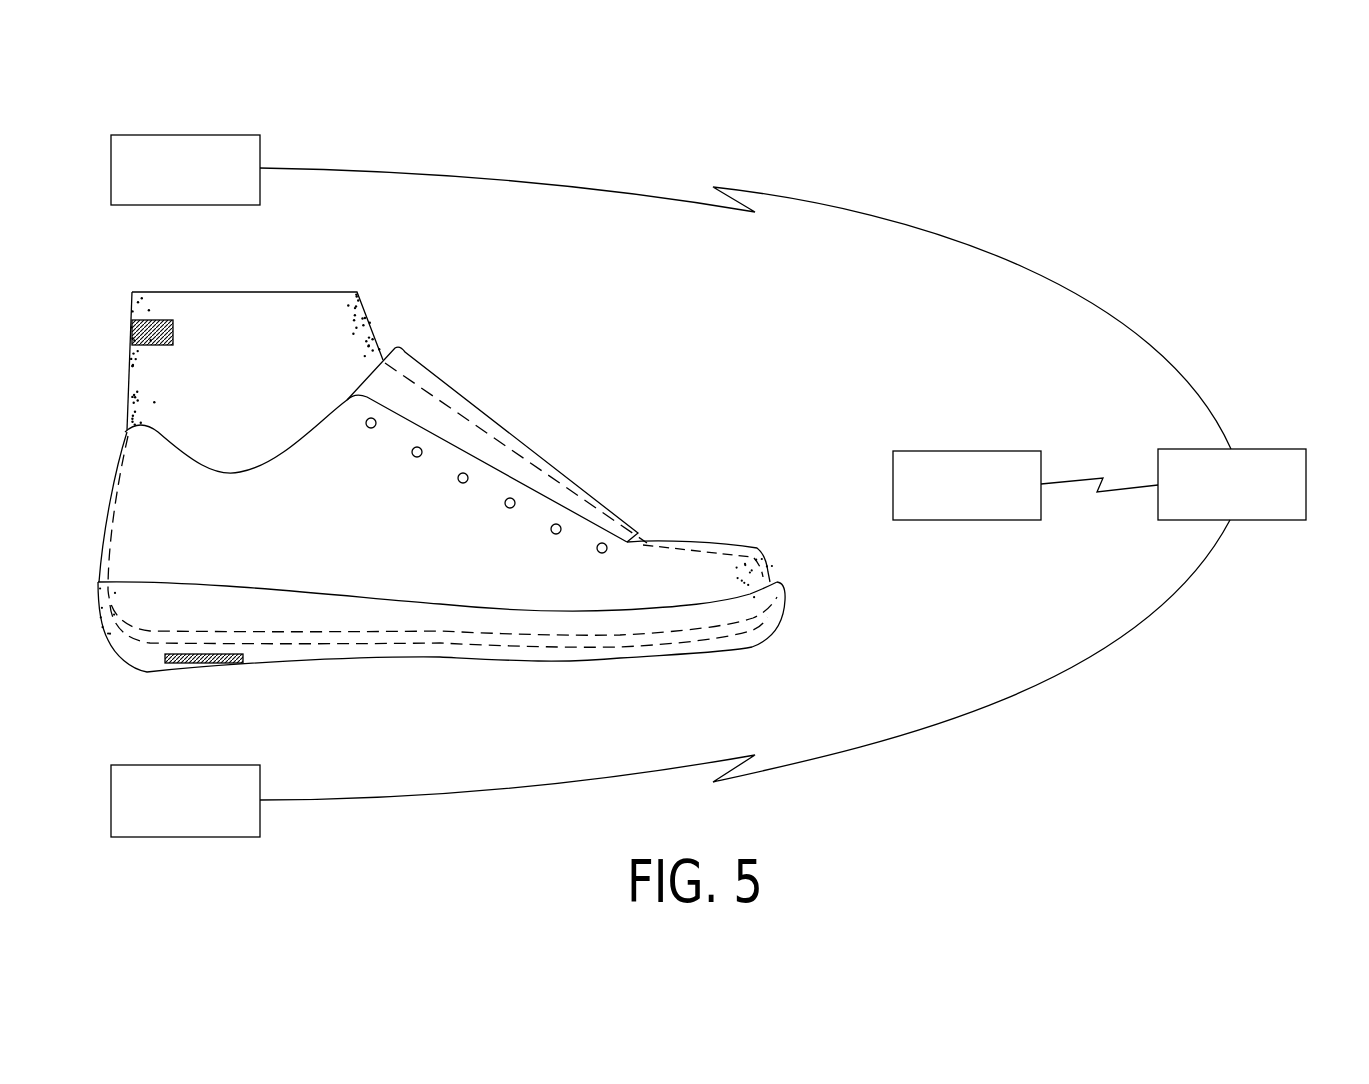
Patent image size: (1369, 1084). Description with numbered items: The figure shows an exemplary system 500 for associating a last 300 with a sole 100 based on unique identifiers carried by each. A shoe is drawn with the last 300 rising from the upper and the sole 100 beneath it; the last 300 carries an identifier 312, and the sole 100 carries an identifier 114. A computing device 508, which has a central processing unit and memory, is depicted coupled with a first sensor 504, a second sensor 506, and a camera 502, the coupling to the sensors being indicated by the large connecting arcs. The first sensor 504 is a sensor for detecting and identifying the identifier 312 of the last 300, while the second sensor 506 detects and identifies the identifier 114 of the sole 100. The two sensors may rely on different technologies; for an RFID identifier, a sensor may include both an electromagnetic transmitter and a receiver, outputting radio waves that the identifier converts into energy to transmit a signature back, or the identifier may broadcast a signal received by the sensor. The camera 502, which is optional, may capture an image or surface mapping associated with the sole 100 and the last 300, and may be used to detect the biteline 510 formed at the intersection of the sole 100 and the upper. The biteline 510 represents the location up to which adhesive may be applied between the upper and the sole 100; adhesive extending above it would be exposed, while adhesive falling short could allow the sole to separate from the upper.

The sole 100 is at (421, 531).
The identifier 114 is at (221, 668).
The last 300 is at (241, 340).
The identifier 312 is at (131, 331).
The system 500 is at (1178, 198).
The camera 502 is at (933, 451).
The first sensor 504 is at (150, 134).
The second sensor 506 is at (150, 838).
The computing device 508 is at (1269, 520).
The biteline 510 is at (188, 582).